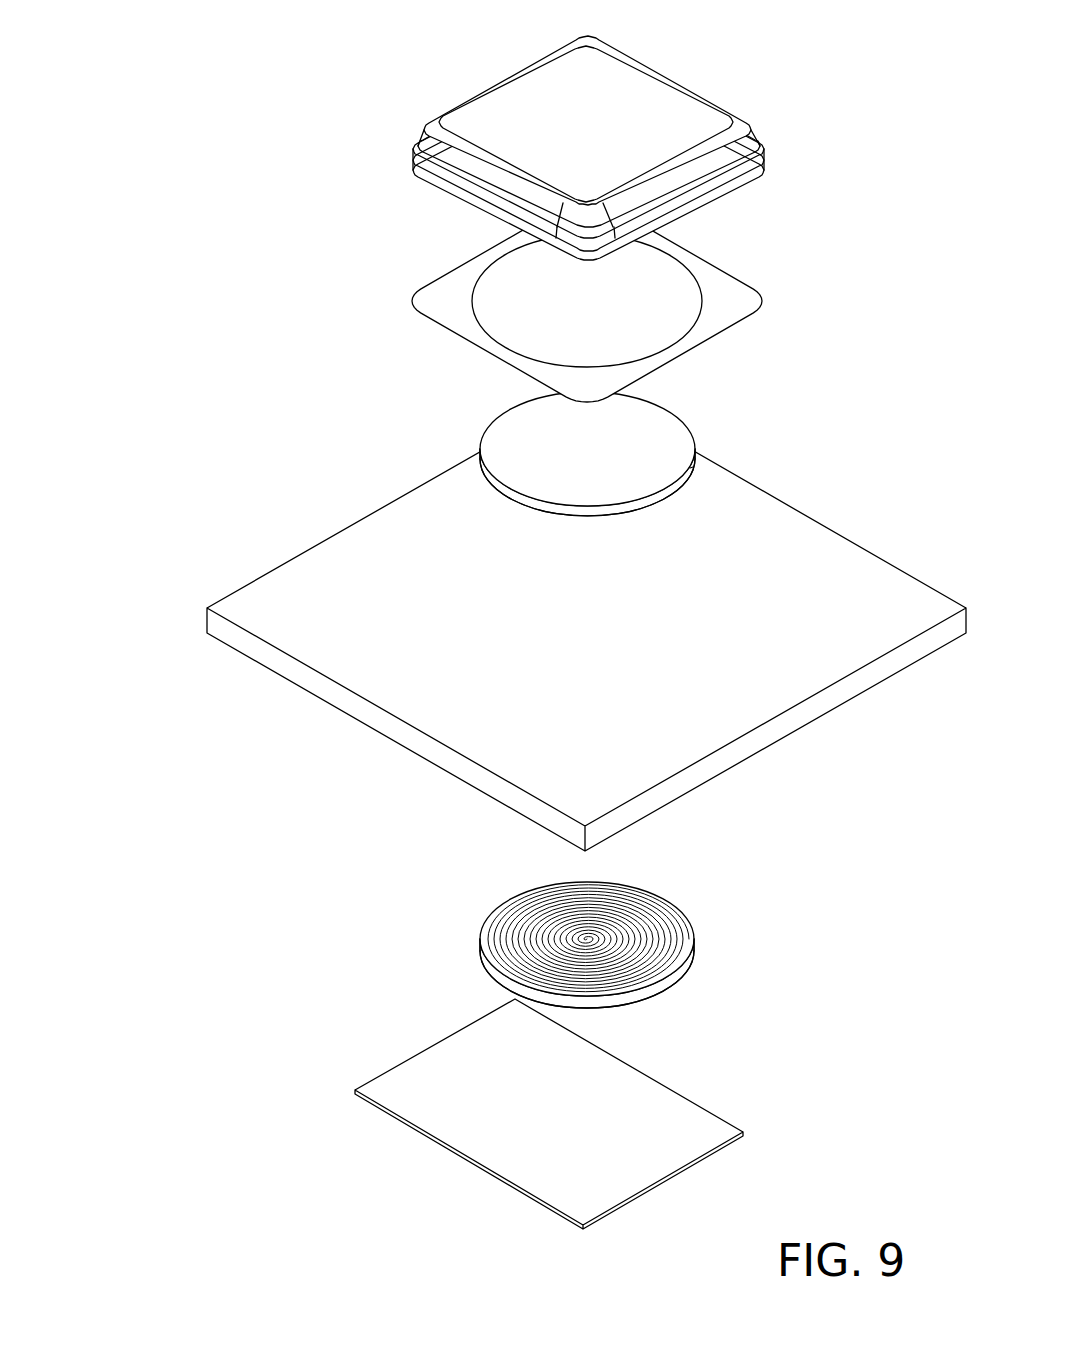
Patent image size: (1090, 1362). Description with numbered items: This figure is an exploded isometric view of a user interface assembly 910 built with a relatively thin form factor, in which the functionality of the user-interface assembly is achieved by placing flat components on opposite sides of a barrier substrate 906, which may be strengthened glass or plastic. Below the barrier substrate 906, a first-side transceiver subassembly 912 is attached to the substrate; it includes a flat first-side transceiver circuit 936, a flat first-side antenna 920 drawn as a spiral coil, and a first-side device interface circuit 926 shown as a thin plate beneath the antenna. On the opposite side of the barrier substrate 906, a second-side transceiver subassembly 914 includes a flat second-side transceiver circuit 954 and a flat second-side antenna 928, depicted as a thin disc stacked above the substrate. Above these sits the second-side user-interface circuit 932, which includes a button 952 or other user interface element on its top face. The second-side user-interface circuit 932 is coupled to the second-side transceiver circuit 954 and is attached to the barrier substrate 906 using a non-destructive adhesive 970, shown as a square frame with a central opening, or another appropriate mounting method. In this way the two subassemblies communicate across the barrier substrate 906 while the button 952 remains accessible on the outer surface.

The user interface assembly 910 is at (137, 57).
The second-side transceiver subassembly 914 is at (292, 277).
The first-side transceiver subassembly 912 is at (292, 978).
The button 952 is at (676, 118).
The second-side user-interface circuit 932 is at (735, 175).
The non-destructive adhesive 970 is at (735, 300).
The second-side transceiver circuit 954 is at (675, 462).
The second-side antenna 928 is at (693, 467).
The barrier substrate 906 is at (734, 651).
The first-side antenna 920 is at (675, 945).
The first-side transceiver circuit 936 is at (695, 958).
The first-side device interface circuit 926 is at (653, 1147).